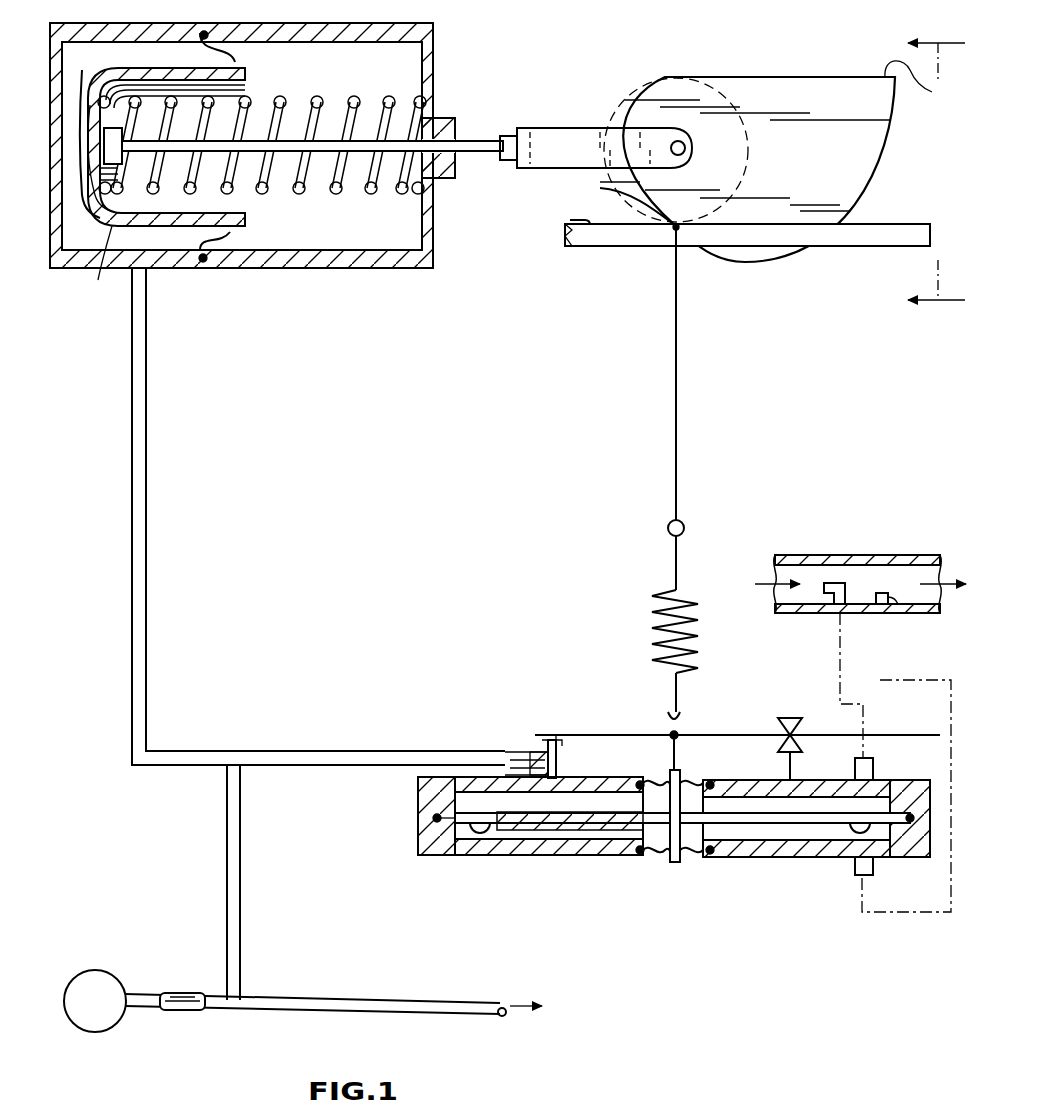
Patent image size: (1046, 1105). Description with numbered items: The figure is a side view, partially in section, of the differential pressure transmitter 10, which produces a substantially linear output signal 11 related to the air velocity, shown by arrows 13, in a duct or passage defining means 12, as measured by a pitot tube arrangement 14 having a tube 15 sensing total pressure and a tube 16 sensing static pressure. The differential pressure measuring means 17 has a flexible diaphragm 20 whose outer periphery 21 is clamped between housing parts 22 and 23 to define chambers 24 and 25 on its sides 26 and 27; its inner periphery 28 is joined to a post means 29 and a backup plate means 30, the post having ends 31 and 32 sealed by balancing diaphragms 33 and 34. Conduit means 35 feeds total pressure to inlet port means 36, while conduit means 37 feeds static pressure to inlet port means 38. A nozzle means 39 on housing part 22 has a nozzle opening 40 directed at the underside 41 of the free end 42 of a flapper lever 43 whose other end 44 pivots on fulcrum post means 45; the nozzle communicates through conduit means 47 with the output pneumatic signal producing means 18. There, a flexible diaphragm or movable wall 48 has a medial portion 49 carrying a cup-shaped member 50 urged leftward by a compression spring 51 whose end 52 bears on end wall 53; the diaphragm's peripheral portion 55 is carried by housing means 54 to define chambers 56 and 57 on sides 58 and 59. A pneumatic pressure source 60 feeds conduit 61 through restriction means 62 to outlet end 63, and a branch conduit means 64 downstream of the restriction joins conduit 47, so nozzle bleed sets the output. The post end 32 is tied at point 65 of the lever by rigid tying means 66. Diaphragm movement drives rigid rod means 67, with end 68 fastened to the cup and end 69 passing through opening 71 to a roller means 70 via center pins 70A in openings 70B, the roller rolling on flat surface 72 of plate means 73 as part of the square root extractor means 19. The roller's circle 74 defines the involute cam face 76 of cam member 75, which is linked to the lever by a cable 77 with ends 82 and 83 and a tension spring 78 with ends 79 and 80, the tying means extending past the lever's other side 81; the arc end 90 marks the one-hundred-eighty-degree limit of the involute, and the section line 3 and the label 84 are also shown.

The differential pressure transmitter 10 is at (552, 92).
The output signal 11 is at (523, 1000).
The duct or passage defining means 12 is at (820, 555).
The air velocity arrows 13 is at (768, 580).
The pitot tube arrangement 14 is at (862, 580).
The tube 15 is at (830, 600).
The tube 16 is at (893, 604).
The means for measuring the differential pressure 17 is at (710, 885).
The output pneumatic signal producing means 18 is at (412, 290).
The square root extractor means 19 is at (655, 278).
The flexible diaphragm 20 is at (478, 836).
The outer periphery 21 is at (437, 822).
The housing part 22 is at (418, 800).
The housing part 23 is at (428, 842).
The chamber 24 is at (480, 800).
The chamber 25 is at (525, 830).
The side of diaphragm 26 is at (882, 785).
The side of diaphragm 27 is at (878, 858).
The inner periphery 28 is at (684, 790).
The post means 29 is at (640, 790).
The diaphragm backup plate means 30 is at (580, 838).
The end of post means 31 is at (650, 858).
The end of post means 32 is at (684, 740).
The balancing diaphragm 33 is at (680, 865).
The balancing diaphragm 34 is at (650, 734).
The conduit means 35 is at (836, 650).
The inlet port means 36 is at (876, 762).
The conduit means 37 is at (905, 680).
The inlet port means 38 is at (852, 872).
The nozzle means 39 is at (537, 752).
The nozzle opening 40 is at (556, 740).
The underside 41 is at (545, 750).
The free end 42 is at (555, 734).
The flapper lever 43 is at (565, 734).
The other end of flapper lever 44 is at (762, 735).
The fulcrum post means 45 is at (780, 768).
The conduit means 47 is at (295, 752).
The flexible diaphragm means or movable wall 48 is at (230, 38).
The medial portion 49 is at (84, 132).
The cup-shaped member 50 is at (245, 205).
The compression spring 51 is at (310, 105).
The end of compression spring 52 is at (99, 269).
The end wall 53 is at (90, 190).
The housing means 54 is at (336, 270).
The peripheral portion 55 is at (205, 45).
The chamber 56 is at (130, 50).
The chamber 57 is at (382, 62).
The side of diaphragm 58 is at (200, 255).
The side of diaphragm 59 is at (228, 240).
The pneumatic pressure source 60 is at (93, 972).
The conduit 61 is at (290, 1000).
The restriction means 62 is at (182, 1012).
The outlet end 63 is at (500, 1020).
The branch conduit means 64 is at (226, 840).
The point 65 is at (678, 732).
The rigid tying means 66 is at (668, 752).
The rigid rod means 67 is at (345, 180).
The end of rod means 68 is at (128, 170).
The end of rod means 69 is at (596, 132).
The roller means 70 is at (645, 78).
The center pins 70A is at (684, 160).
The openings 70B is at (684, 142).
The opening 71 is at (445, 128).
The flat surface 72 is at (578, 220).
The plate means 73 is at (848, 240).
The circle 74 is at (728, 70).
The cam member 75 is at (800, 80).
The cam face 76 is at (752, 270).
The cable 77 is at (680, 425).
The tension spring 78 is at (655, 608).
The end of tension spring 79 is at (668, 528).
The end of tension spring 80 is at (680, 712).
The other side of lever 81 is at (580, 734).
The end of cable 82 is at (677, 255).
The end of cable 83 is at (680, 515).
The element 84 is at (695, 1094).
The end of the arc 90 is at (919, 86).
The section line 3 is at (925, 171).